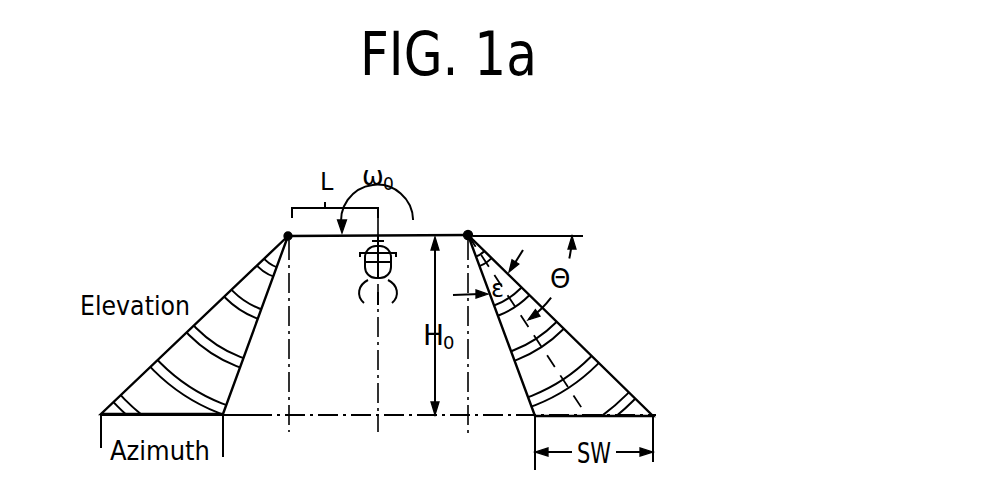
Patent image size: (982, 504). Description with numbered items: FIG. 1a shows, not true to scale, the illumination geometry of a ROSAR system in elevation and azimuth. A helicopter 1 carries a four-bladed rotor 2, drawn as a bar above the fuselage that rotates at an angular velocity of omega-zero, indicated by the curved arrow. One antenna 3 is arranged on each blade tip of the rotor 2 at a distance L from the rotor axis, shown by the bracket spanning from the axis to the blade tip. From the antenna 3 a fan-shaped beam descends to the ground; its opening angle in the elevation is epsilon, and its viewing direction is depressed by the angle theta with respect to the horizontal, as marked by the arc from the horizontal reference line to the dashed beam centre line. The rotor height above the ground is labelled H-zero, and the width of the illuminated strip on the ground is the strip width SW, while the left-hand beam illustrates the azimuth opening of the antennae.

The helicopter 1 is at (372, 296).
The rotor 2 is at (450, 236).
The antenna 3 is at (470, 235).